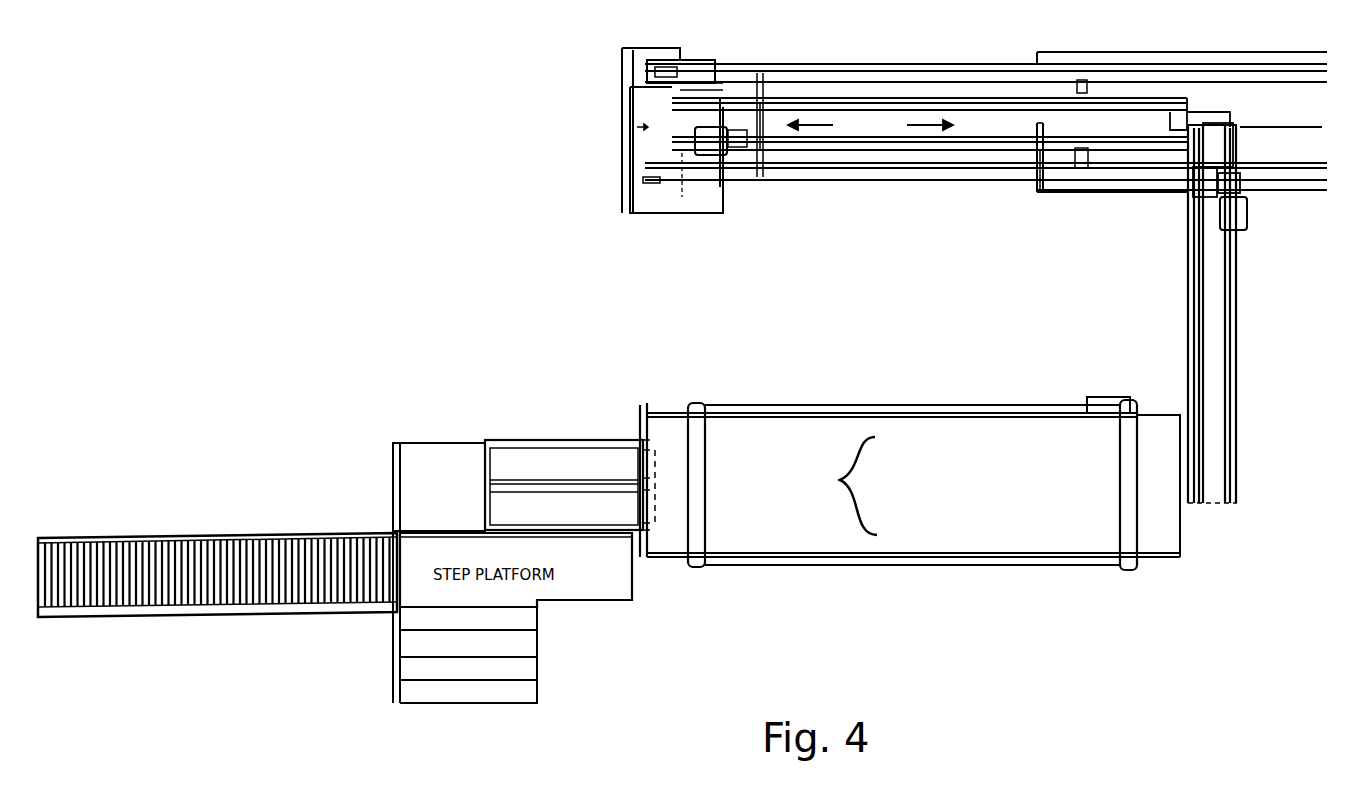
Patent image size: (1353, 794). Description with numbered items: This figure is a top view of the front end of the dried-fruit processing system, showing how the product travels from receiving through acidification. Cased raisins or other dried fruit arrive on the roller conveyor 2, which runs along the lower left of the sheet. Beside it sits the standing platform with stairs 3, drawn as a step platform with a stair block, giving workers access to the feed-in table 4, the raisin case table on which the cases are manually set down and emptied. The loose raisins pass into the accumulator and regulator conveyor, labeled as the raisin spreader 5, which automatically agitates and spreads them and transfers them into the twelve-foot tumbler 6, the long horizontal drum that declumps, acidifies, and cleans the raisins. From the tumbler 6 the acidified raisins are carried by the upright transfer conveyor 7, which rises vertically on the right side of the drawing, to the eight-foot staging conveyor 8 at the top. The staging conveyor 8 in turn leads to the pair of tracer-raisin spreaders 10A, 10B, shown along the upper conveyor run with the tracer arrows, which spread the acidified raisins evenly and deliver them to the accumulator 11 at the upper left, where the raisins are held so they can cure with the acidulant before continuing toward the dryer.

The roller conveyor 2 is at (217, 562).
The standing platform with stairs 3 is at (468, 655).
The feed-in table 4 is at (439, 487).
The accumulator and regulator conveyor (raisin spreader) 5 is at (570, 485).
The 12' tumbler declumper cleaner acidifier 6 is at (910, 465).
The upright transfer conveyor 7 is at (1255, 313).
The 8' staging conveyor 8 is at (1053, 194).
The tracer-raisins spreader 10A is at (986, 122).
The tracer-raisins spreader 10B is at (986, 122).
The accumulator production 11 is at (692, 130).